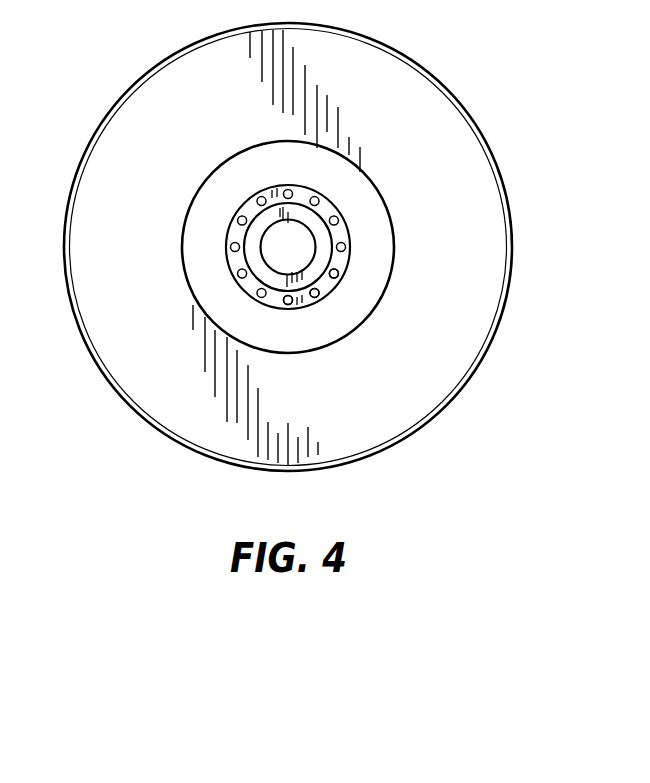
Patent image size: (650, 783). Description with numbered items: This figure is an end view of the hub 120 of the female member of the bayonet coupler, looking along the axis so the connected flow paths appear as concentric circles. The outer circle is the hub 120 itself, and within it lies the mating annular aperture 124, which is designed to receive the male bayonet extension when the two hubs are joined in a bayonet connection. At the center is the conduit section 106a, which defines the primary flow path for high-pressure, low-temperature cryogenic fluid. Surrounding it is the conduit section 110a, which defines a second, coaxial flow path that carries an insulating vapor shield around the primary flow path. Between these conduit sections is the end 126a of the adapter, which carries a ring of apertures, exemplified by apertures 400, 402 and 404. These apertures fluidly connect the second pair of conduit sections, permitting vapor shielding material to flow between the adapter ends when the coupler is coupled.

The hub 120 is at (463, 110).
The annular aperture 124 is at (234, 180).
The end 126a is at (289, 189).
The conduit section 106a is at (252, 239).
The conduit section 110a is at (335, 206).
The aperture 400 is at (290, 304).
The aperture 402 is at (316, 297).
The aperture 404 is at (337, 275).